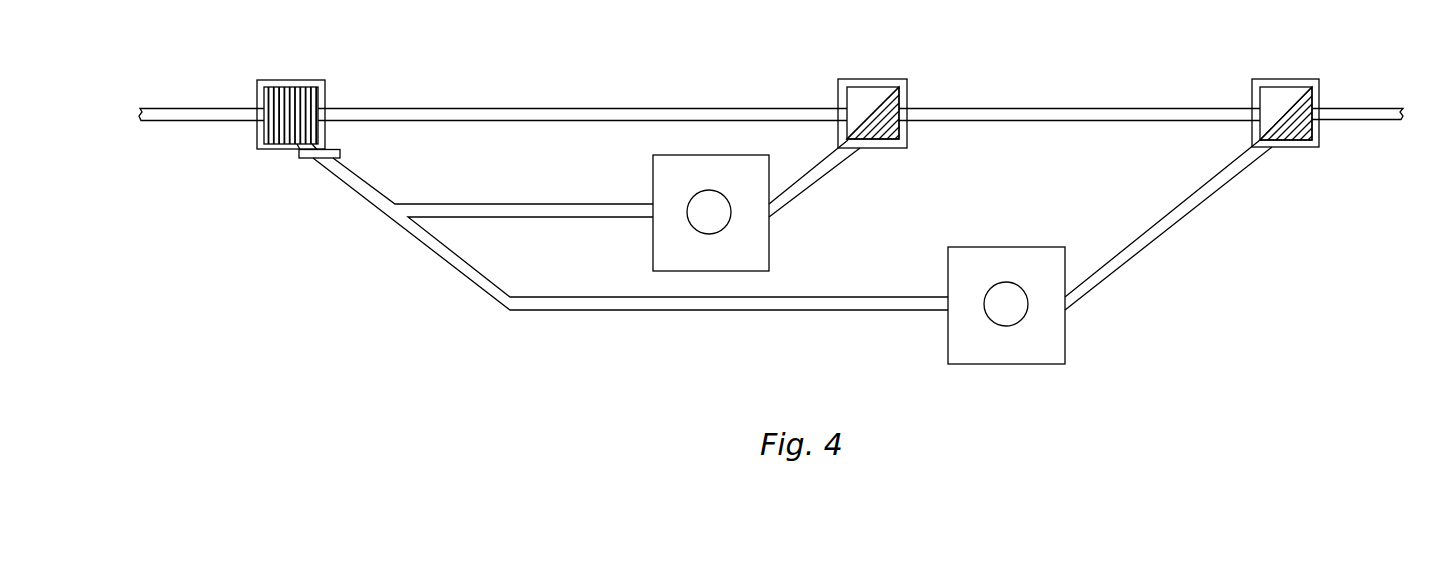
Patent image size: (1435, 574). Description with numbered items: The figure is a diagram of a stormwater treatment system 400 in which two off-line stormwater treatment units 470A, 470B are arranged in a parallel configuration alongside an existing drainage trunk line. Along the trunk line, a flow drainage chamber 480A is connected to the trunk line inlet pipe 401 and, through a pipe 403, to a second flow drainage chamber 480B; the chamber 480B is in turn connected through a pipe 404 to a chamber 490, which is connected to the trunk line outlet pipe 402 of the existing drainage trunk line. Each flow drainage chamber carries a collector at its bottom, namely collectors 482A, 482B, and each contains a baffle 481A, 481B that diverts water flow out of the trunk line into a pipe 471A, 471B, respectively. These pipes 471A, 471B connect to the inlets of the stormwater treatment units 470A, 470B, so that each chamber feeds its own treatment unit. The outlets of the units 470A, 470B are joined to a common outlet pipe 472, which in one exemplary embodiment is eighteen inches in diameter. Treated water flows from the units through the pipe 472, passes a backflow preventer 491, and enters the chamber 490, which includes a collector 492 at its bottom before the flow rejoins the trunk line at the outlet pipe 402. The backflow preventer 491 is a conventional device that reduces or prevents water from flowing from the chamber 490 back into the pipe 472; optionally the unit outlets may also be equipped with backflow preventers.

The stormwater treatment system 400 is at (823, 378).
The trunk line inlet pipe 401 is at (1349, 105).
The trunk line outlet pipe 402 is at (218, 104).
The pipe 403 is at (1121, 106).
The pipe 404 is at (473, 105).
The off-line stormwater treatment unit 470A is at (1018, 247).
The off-line stormwater treatment unit 470B is at (720, 155).
The pipe 471A is at (1201, 207).
The pipe 471B is at (803, 193).
The outlet pipe 472 is at (668, 311).
The flow drainage chamber 480A is at (1280, 79).
The flow drainage chamber 480B is at (858, 78).
The baffle 481A is at (1280, 106).
The baffle 481B is at (870, 108).
The collector 482A is at (1313, 133).
The collector 482B is at (898, 133).
The chamber 490 is at (275, 80).
The backflow preventer 491 is at (305, 160).
The collector 492 is at (320, 130).